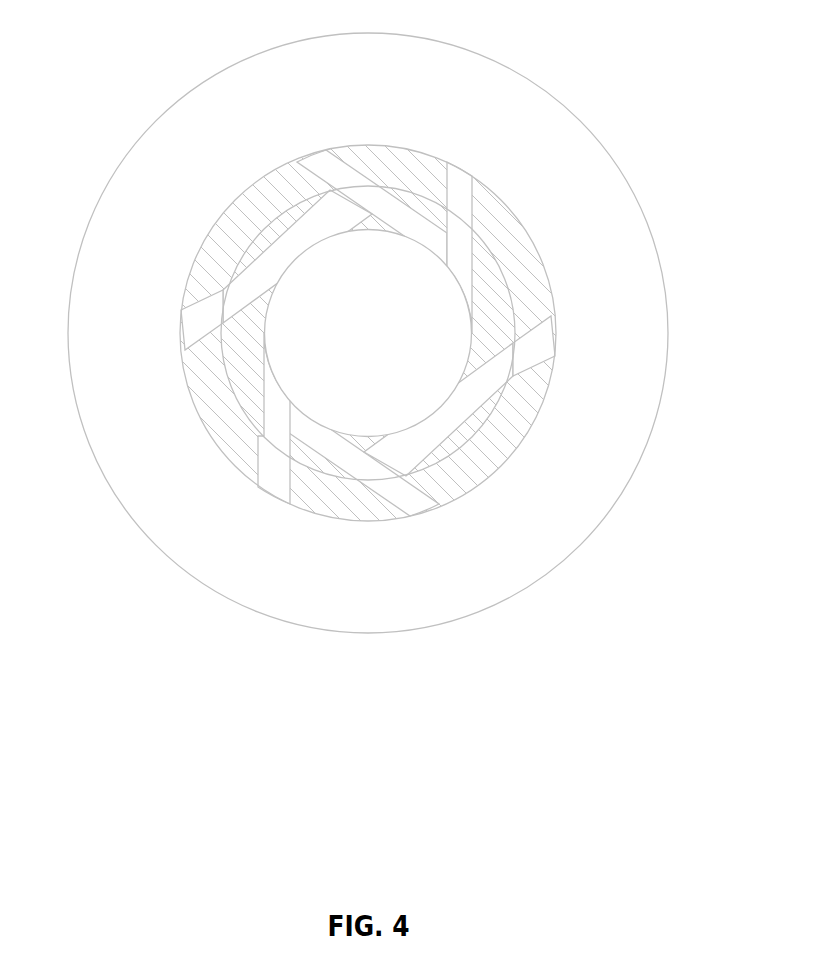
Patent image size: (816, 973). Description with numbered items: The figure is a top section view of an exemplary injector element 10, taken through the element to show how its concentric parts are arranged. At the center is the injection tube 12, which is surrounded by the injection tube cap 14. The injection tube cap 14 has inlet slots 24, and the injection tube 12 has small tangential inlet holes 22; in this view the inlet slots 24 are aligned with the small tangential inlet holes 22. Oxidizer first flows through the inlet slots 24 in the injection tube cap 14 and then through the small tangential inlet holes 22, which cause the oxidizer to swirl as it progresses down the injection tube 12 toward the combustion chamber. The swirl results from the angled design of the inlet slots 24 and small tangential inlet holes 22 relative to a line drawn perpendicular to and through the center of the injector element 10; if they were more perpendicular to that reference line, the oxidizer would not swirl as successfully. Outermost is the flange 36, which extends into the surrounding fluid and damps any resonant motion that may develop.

The injector element 10 is at (680, 172).
The injection tube 12 is at (522, 305).
The injection tube cap 14 is at (510, 206).
The small tangential inlet holes 22 is at (183, 305).
The inlet slots 24 is at (272, 476).
The flange 36 is at (513, 598).